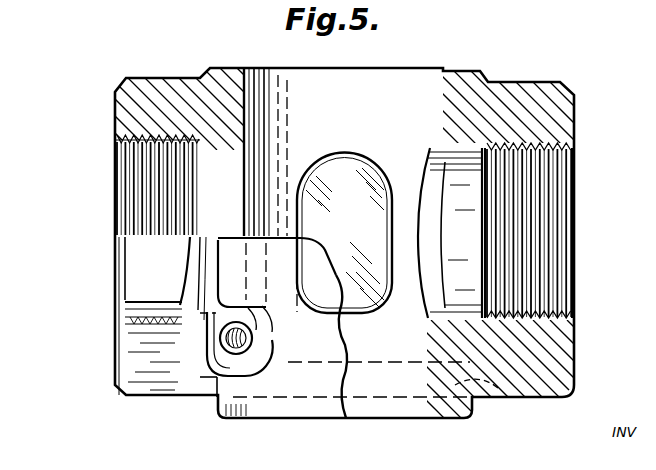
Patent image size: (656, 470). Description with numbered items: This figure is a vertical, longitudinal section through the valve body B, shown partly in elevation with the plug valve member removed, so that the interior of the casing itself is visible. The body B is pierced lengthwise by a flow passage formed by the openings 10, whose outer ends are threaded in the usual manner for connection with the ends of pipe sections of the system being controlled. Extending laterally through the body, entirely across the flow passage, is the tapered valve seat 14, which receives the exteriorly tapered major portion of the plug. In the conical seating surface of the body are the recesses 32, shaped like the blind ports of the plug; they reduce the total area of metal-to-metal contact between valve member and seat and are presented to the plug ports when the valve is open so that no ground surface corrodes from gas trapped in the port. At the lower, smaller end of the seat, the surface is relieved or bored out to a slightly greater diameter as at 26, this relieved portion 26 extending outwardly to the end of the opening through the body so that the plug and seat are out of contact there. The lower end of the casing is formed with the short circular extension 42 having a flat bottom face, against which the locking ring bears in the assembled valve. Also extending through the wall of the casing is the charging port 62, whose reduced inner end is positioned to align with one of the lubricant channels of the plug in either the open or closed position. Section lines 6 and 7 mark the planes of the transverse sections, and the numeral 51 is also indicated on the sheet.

The valve body B is at (580, 92).
The openings 10 is at (222, 108).
The tapered valve seat 14 is at (256, 96).
The recesses 32 is at (374, 158).
The charging port 62 is at (204, 386).
The circular extension 42 is at (250, 412).
The relieved portion 26 is at (430, 380).
The section line 7- 7 is at (345, 428).
The section line 6- 6 is at (88, 196).
The element 51 is at (72, 2).